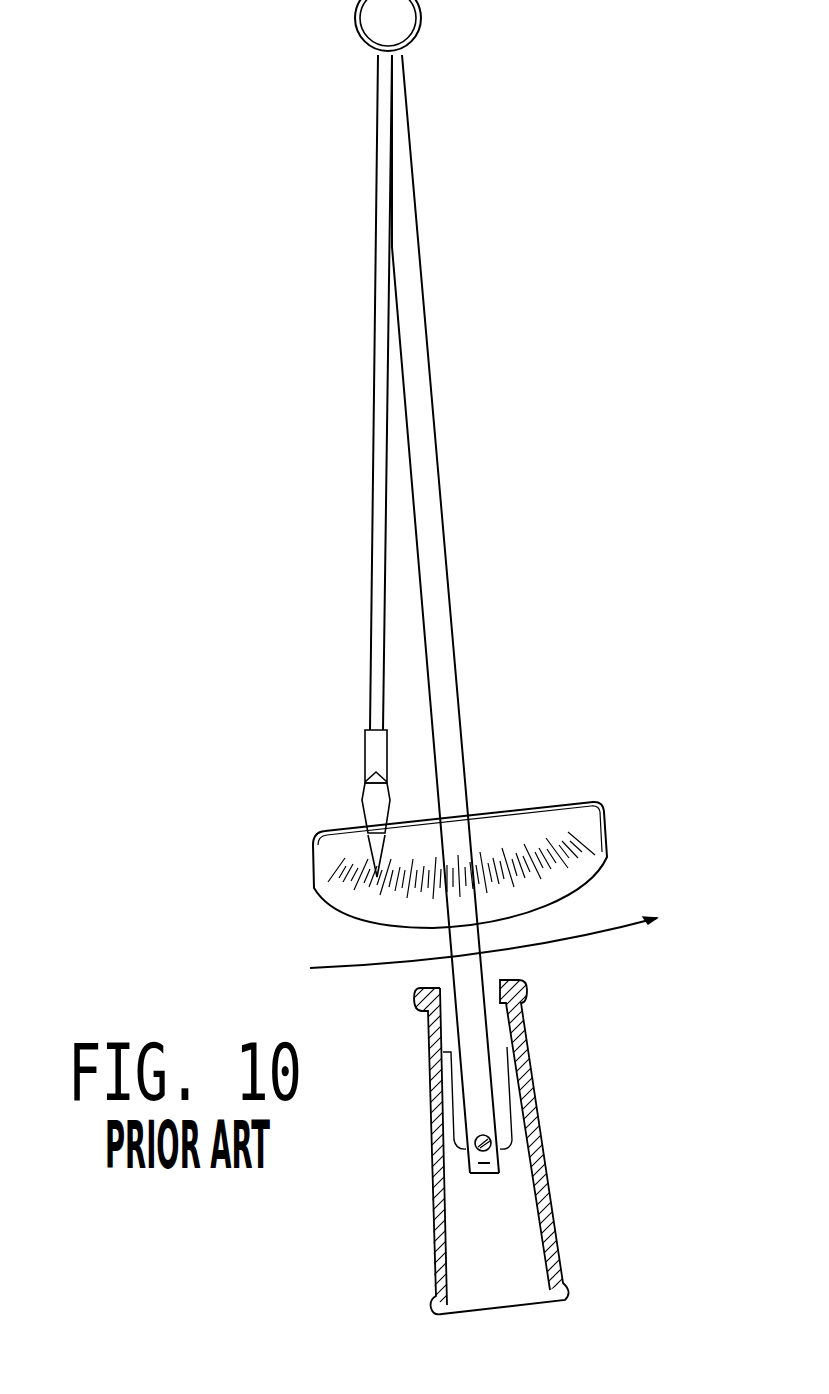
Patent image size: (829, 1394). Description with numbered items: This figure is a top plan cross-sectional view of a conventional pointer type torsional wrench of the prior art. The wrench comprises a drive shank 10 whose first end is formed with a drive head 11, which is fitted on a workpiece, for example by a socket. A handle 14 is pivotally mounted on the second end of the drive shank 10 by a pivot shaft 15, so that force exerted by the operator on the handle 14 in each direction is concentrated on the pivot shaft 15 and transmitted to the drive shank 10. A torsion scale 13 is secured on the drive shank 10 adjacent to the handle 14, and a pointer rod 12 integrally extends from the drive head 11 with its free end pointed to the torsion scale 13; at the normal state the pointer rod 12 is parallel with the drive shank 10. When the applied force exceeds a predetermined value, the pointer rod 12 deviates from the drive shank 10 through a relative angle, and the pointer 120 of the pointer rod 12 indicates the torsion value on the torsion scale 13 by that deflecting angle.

The drive shank 10 is at (437, 494).
The drive head 11 is at (420, 17).
The pointer rod 12 is at (377, 408).
The pointer 120 is at (375, 850).
The torsion scale 13 is at (505, 822).
The handle 14 is at (542, 1172).
The pivot shaft 15 is at (490, 1137).